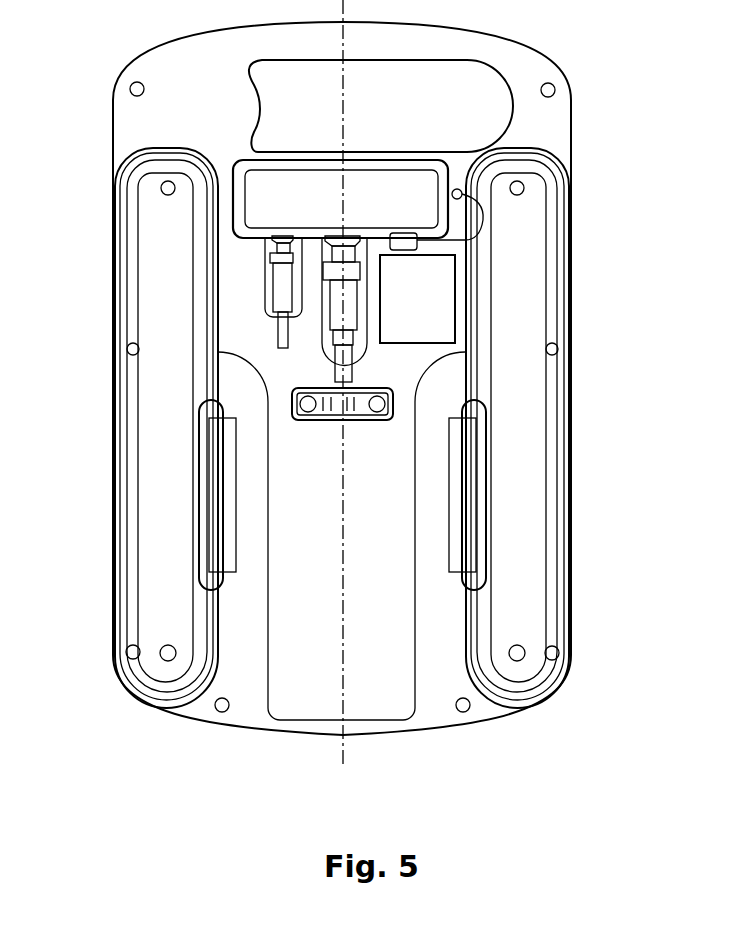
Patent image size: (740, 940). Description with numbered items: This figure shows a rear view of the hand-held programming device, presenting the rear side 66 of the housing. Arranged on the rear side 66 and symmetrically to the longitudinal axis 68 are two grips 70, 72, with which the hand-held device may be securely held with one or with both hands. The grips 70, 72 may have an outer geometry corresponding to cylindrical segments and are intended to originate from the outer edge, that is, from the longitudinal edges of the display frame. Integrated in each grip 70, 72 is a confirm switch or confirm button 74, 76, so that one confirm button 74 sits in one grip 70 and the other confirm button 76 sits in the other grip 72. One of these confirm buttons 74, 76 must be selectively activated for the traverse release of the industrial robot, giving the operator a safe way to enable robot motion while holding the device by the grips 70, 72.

The rear side 66 is at (554, 124).
The longitudinal axis 68 is at (346, 117).
The grip 70 is at (134, 506).
The grip 72 is at (554, 507).
The confirm switch 74 is at (229, 509).
The confirm switch 76 is at (455, 506).